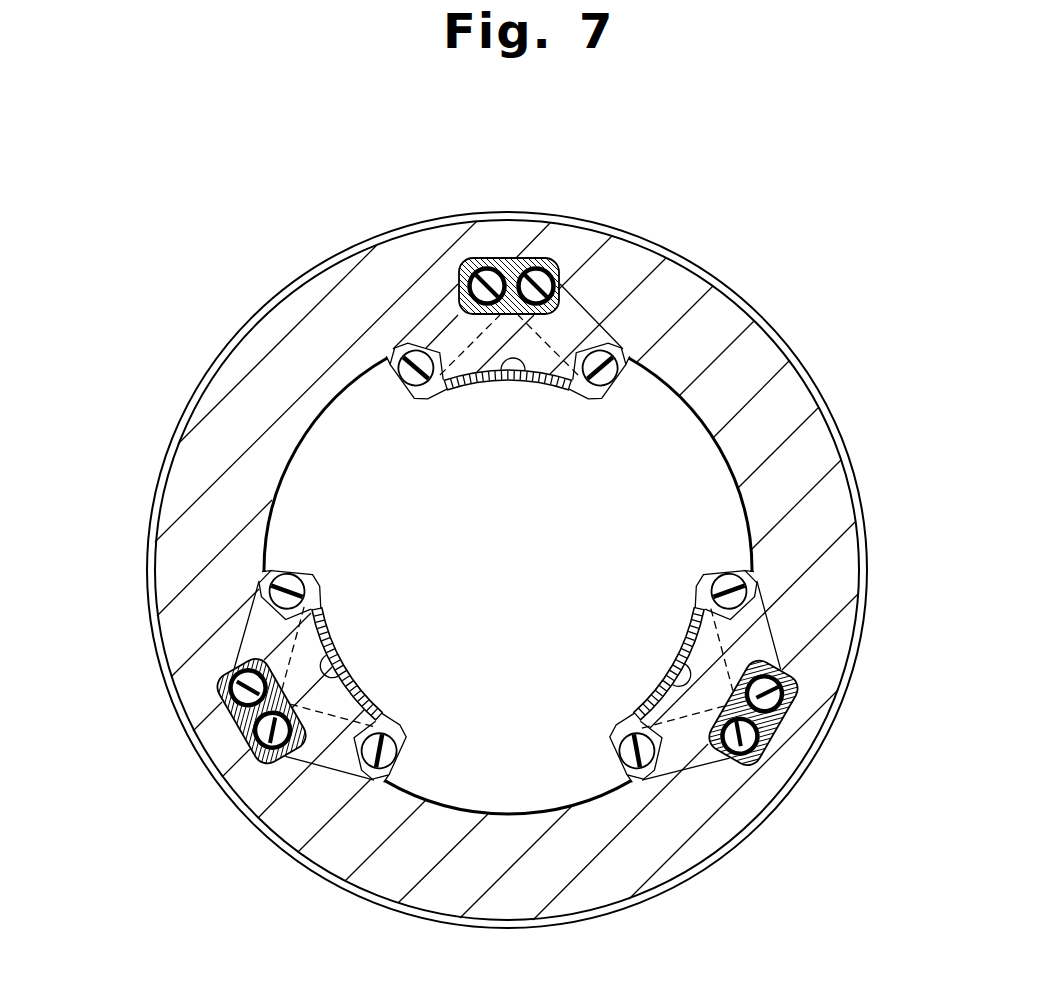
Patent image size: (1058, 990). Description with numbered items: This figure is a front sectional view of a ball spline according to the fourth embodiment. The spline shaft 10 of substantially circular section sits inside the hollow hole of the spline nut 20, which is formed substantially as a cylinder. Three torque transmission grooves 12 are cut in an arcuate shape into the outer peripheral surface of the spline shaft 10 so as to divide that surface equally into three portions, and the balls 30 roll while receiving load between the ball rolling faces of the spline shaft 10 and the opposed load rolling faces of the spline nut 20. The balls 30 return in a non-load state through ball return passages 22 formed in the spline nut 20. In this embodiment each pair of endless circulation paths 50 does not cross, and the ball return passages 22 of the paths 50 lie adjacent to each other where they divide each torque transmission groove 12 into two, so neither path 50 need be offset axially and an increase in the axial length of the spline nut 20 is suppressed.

The spline shaft 10 is at (534, 582).
The torque transmission groove 12 is at (509, 384).
The spline nut 20 is at (748, 297).
The ball return passage 22 is at (489, 262).
The ball 30 is at (412, 387).
The endless circulation path 50 is at (437, 303).